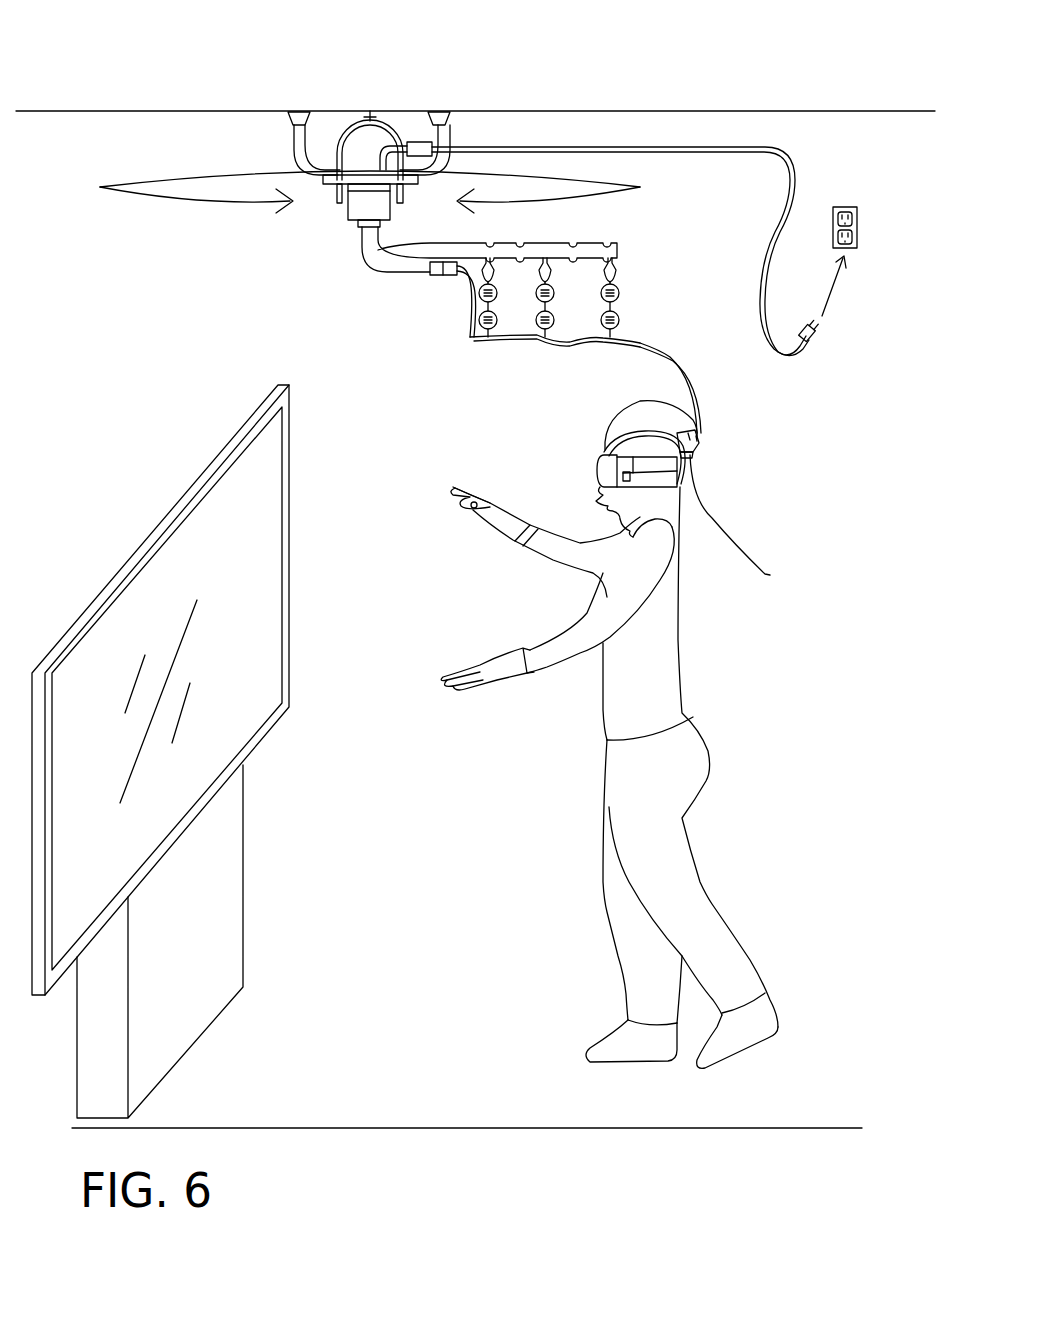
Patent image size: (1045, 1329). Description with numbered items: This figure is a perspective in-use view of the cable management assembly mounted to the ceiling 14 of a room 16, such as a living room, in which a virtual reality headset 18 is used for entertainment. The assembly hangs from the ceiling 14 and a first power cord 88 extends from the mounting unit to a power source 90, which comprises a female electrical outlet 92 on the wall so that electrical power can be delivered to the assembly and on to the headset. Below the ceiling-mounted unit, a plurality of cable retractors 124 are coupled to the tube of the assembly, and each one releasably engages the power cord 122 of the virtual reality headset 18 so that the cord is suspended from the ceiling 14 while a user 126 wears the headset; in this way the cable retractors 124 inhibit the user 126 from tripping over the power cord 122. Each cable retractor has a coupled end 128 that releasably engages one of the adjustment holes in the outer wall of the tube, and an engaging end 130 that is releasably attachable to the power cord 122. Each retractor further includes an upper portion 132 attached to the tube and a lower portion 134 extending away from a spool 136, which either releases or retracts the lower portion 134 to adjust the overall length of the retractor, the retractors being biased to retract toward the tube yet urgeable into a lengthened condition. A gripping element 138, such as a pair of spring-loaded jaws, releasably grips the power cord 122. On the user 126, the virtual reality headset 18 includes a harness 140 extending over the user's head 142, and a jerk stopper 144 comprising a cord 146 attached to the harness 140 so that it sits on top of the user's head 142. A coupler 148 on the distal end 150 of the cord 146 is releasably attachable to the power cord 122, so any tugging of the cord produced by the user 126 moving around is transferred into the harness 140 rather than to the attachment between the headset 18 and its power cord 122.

The ceiling 14 is at (73, 113).
The room 16 is at (890, 422).
The virtual reality headset 18 is at (697, 403).
The first power cord 88 is at (393, 145).
The power source 90 is at (857, 207).
The female electrical outlet 92 is at (858, 247).
The power cord of the virtual reality headset 122 is at (697, 441).
The cable retractors 124 is at (558, 221).
The user 126 is at (690, 618).
The coupled end 128 is at (617, 250).
The engaging end 130 is at (631, 345).
The upper portion 132 is at (534, 257).
The lower portion 134 is at (560, 311).
The spool 136 is at (567, 288).
The gripping element 138 is at (540, 348).
The harness 140 is at (757, 524).
The user's head 142 is at (606, 488).
The jerk stopper 144 is at (700, 438).
The cord 146 is at (688, 409).
The coupler 148 is at (692, 444).
The distal end 150 is at (687, 455).